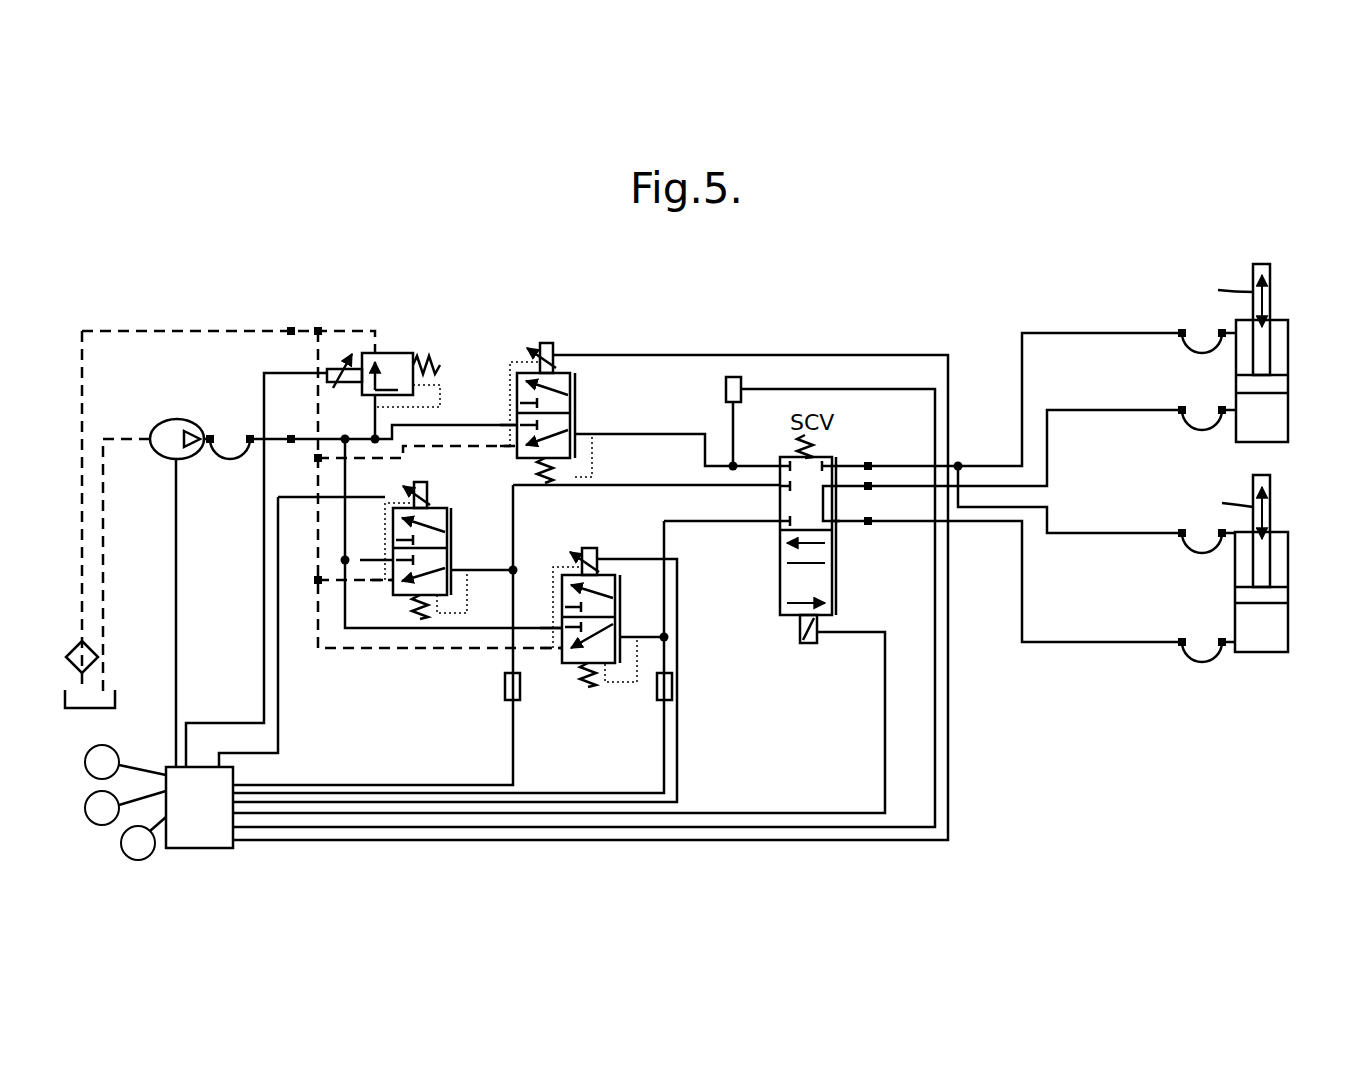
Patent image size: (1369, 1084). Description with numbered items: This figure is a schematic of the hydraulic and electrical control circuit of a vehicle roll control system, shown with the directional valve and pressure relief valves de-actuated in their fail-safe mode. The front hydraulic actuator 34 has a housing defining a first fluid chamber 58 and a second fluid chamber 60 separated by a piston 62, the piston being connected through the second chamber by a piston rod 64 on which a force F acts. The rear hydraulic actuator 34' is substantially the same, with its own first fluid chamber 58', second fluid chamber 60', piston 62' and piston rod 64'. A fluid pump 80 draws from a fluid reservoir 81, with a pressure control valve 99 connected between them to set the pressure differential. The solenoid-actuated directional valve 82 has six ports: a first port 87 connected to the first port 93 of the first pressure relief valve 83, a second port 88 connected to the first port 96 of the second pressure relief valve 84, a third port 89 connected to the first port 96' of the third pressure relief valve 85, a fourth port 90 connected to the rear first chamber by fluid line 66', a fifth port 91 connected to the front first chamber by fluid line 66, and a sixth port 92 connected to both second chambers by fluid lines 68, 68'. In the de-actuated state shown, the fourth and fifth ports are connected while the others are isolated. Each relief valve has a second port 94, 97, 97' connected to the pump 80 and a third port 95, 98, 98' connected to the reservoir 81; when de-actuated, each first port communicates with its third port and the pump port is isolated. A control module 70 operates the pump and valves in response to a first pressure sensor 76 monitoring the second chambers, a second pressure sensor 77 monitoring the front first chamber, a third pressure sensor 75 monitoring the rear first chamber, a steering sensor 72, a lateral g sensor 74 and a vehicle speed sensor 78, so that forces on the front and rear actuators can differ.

The front hydraulic actuator 34 is at (1278, 341).
The piston rod 64 is at (1298, 319).
The second fluid chamber 60 is at (1292, 347).
The piston 62 is at (1290, 387).
The first fluid chamber 58 is at (1290, 381).
The fluid line 68 is at (1034, 375).
The fluid line 66 is at (1034, 426).
The rear hydraulic actuator 34' is at (1281, 552).
The piston rod 64' is at (1297, 519).
The second fluid chamber 60' is at (1290, 559).
The piston 62' is at (1288, 594).
The first fluid chamber 58' is at (1288, 592).
The fluid line 68' is at (1096, 509).
The fluid line 66' is at (1033, 589).
The pressure control valve 99 is at (393, 353).
The fluid pump 80 is at (183, 461).
The fluid reservoir 81 is at (115, 692).
The second port of first pressure relief valve 94 is at (517, 424).
The first pressure relief valve 83 is at (590, 591).
The first port of first pressure relief valve 93 is at (568, 435).
The third port of first pressure relief valve 95 is at (522, 446).
The first pressure sensor 76 is at (726, 389).
The first port of directional valve 87 is at (782, 466).
The sixth port of directional valve 92 is at (833, 466).
The fifth port of directional valve 91 is at (838, 486).
The second port of directional valve 88 is at (780, 487).
The third port of directional valve 89 is at (778, 522).
The fourth port of directional valve 90 is at (832, 523).
The directional valve 82 is at (833, 597).
The second pressure relief valve 84 is at (368, 611).
The second port of second pressure relief valve 97 is at (375, 536).
The third port of second pressure relief valve 98 is at (378, 604).
The first port of second pressure relief valve 96 is at (479, 622).
The third pressure relief valve 85 is at (455, 665).
The second port of third pressure relief valve 97' is at (540, 607).
The first port of third pressure relief valve 96' is at (634, 617).
The third port of third pressure relief valve 98' is at (546, 669).
The second pressure sensor 77 is at (505, 692).
The third pressure sensor 75 is at (670, 688).
The control module 70 is at (199, 807).
The steering sensor 72 is at (125, 762).
The lateral g sensor 74 is at (125, 808).
The vehicle speed sensor 78 is at (143, 838).